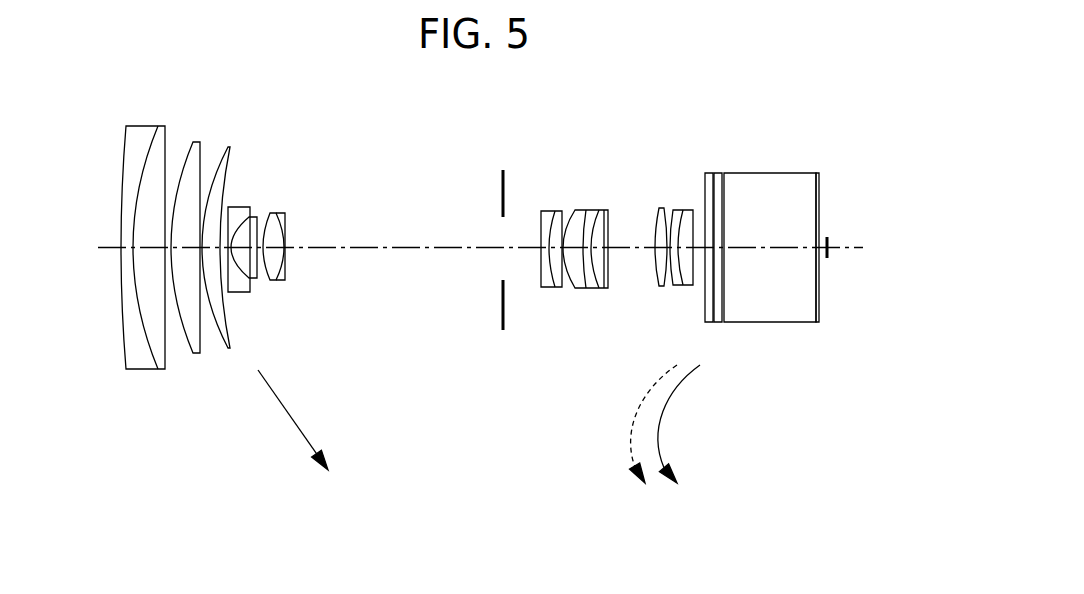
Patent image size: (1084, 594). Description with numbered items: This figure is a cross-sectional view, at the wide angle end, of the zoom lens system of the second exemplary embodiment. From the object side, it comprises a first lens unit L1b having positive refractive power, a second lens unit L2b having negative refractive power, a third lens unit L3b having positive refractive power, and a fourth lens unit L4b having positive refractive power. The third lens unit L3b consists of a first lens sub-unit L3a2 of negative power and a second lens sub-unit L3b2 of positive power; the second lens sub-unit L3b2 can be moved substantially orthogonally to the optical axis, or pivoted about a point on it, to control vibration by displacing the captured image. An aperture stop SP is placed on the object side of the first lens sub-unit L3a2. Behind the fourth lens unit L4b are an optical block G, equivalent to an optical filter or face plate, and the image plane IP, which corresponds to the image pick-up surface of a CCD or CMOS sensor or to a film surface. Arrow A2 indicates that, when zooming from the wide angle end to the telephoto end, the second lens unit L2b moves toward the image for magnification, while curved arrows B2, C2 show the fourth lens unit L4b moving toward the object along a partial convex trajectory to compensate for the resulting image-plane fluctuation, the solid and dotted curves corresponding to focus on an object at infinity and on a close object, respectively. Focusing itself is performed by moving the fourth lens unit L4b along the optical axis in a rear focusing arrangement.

The first lens unit L1b is at (230, 390).
The second lens unit L2b is at (287, 302).
The aperture stop SP is at (502, 170).
The first lens sub-unit L3a2 is at (560, 187).
The second lens sub-unit L3b2 is at (588, 222).
The third lens unit L3b is at (563, 271).
The fourth lens unit L4b is at (697, 313).
The optical block G is at (833, 163).
The image plane IP is at (828, 237).
The second lens unit movement A2 is at (293, 420).
The fourth lens unit movement B2 is at (633, 424).
The movement locus of fourth lens unit during zooming C2 is at (679, 424).